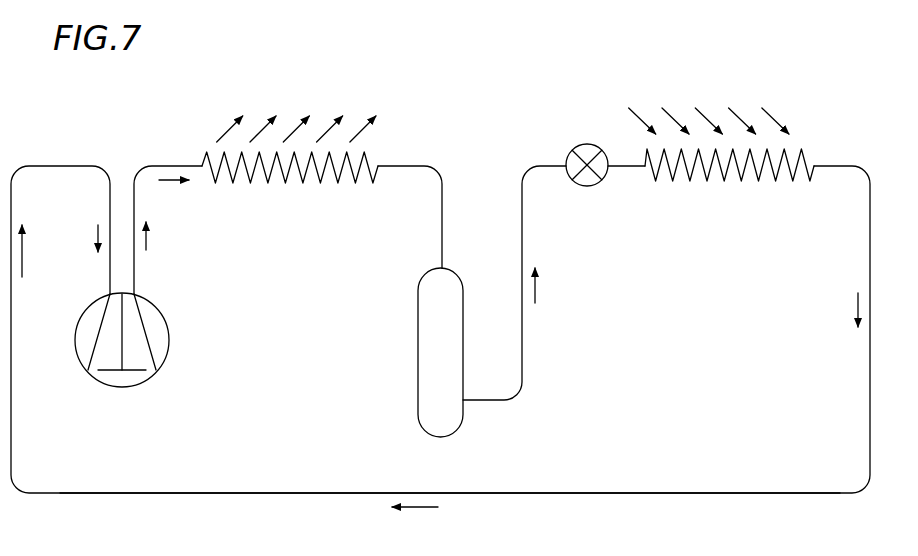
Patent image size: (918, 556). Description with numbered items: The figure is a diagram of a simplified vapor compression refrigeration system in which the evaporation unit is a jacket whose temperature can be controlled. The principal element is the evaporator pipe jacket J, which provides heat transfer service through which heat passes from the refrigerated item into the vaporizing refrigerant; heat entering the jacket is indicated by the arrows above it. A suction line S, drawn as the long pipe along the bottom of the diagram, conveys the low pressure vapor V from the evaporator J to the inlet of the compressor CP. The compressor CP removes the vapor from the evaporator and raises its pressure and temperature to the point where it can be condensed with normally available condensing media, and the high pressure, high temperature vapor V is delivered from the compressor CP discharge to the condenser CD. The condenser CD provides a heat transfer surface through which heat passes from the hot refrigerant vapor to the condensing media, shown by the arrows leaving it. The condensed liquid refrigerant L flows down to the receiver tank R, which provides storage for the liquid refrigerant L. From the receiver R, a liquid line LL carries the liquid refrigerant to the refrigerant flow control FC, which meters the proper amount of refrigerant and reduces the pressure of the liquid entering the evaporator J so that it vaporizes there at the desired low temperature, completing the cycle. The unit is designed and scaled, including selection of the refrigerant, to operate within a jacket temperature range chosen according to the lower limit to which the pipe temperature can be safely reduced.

The compressor CP is at (128, 387).
The condenser CD is at (303, 183).
The refrigerant flow control FC is at (594, 186).
The evaporator pipe jacket J is at (741, 181).
The receiver tank R is at (418, 347).
The suction line S is at (698, 492).
The liquid refrigerant L is at (432, 200).
The liquid line LL is at (550, 285).
The vapor V is at (440, 358).